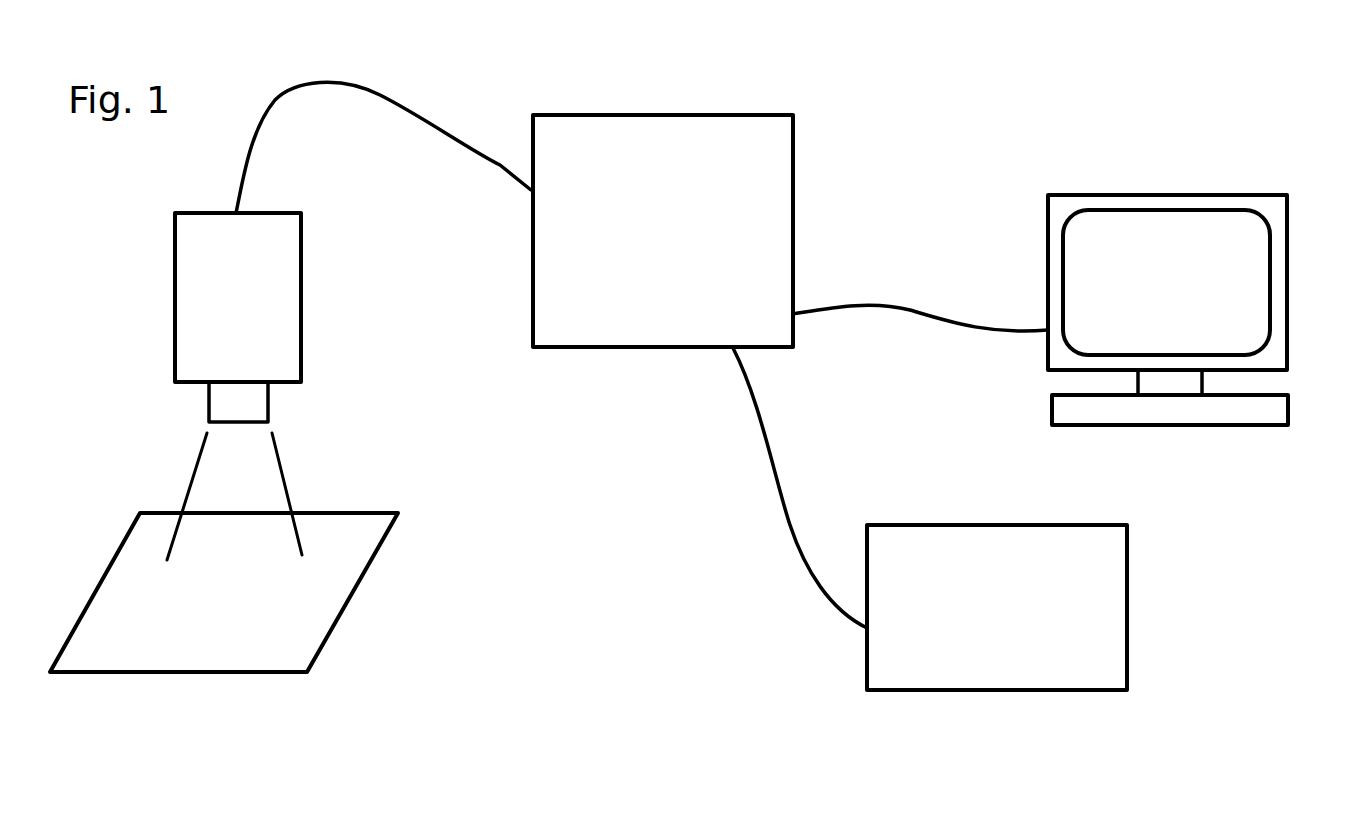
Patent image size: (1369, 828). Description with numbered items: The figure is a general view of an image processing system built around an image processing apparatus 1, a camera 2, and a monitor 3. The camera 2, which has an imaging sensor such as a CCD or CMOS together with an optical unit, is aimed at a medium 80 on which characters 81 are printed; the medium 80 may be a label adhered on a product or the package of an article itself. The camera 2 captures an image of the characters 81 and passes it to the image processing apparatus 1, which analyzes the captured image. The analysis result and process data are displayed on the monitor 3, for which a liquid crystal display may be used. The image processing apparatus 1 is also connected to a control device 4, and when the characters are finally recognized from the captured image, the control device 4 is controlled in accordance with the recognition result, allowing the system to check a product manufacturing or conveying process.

The image processing apparatus 1 is at (762, 112).
The camera 2 is at (301, 281).
The monitor 3 is at (1287, 247).
The control device 4 is at (1127, 590).
The medium 80 is at (382, 543).
The characters 81 is at (147, 643).